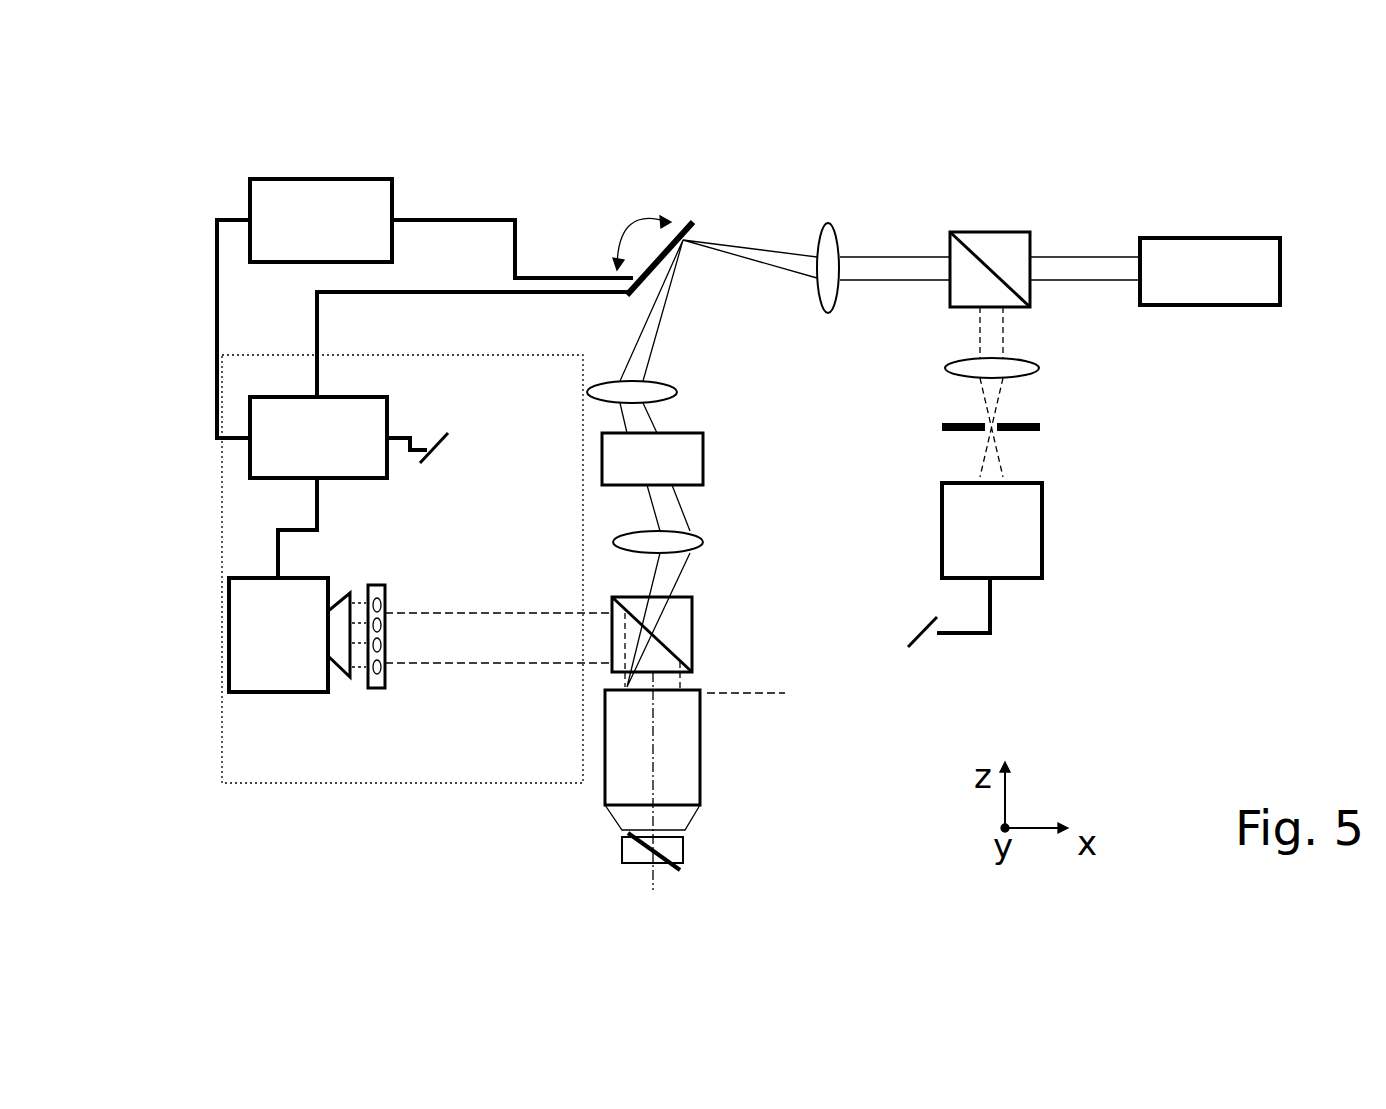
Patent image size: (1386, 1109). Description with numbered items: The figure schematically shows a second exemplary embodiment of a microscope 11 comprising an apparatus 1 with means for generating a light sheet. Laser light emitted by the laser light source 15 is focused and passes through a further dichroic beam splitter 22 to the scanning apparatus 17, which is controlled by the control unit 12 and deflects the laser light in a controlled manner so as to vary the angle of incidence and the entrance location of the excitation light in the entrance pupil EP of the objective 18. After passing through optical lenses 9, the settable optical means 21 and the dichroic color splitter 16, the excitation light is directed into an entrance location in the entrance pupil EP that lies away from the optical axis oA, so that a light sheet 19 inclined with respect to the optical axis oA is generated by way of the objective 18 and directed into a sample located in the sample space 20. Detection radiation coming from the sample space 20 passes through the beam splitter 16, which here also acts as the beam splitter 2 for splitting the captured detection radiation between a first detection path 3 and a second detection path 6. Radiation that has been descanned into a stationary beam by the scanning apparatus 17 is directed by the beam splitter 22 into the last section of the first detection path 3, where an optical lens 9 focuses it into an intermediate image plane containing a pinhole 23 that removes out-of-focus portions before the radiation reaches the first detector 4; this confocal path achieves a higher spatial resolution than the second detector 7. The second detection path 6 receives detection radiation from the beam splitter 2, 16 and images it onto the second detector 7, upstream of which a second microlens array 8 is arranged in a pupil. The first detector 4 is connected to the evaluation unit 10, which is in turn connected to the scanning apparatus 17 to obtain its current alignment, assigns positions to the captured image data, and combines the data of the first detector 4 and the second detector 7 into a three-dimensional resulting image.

The apparatus 1 is at (218, 562).
The beam splitter 2 is at (728, 640).
The first detection path 3 is at (978, 332).
The first detector 4 is at (975, 565).
The second detection path 6 is at (438, 665).
The second detector 7 is at (289, 635).
The second microlens array 8 is at (372, 690).
The optical lens 9 is at (822, 303).
The evaluation unit 10 is at (439, 435).
The microscope 11 is at (544, 209).
The control unit 12 is at (425, 308).
The laser light source 15 is at (1210, 271).
The dichroic color splitter 16 is at (692, 630).
The scanning apparatus 17 is at (695, 227).
The objective 18 is at (700, 742).
The light sheet 19 is at (678, 875).
The sample space 20 is at (622, 855).
The settable optical means 21 is at (703, 447).
The further dichroic beam splitter 22 is at (1002, 230).
The pinhole 23 is at (1027, 432).
The entrance pupil EP is at (757, 693).
The optical axis oA is at (655, 776).